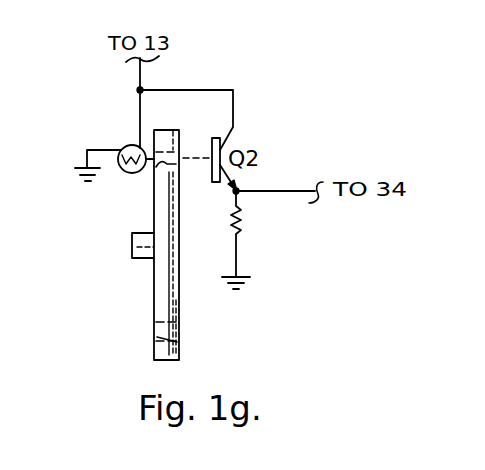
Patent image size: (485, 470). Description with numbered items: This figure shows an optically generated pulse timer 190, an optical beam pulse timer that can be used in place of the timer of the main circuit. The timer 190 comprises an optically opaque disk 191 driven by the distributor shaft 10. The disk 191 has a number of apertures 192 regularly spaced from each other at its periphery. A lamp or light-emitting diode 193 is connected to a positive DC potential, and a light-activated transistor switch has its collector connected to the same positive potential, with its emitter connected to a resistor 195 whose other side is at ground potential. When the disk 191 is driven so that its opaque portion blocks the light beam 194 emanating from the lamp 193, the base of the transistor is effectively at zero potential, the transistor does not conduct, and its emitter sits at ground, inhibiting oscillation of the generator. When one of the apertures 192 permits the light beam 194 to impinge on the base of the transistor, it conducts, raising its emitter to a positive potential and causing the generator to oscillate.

The distributor shaft 10 is at (134, 246).
The optically generated pulse timer 190 is at (334, 268).
The optically opaque disk 191 is at (160, 217).
The apertures 192 is at (162, 172).
The lamp or light-emitting diode 193 is at (132, 146).
The light beam 194 is at (201, 122).
The resistor 195 is at (237, 226).